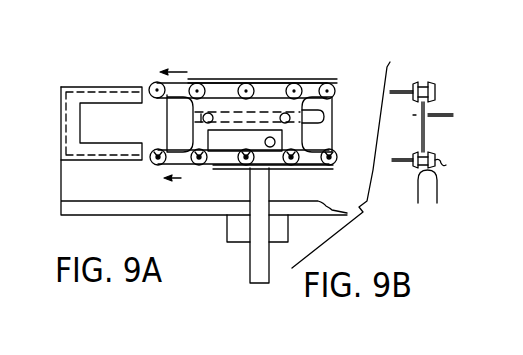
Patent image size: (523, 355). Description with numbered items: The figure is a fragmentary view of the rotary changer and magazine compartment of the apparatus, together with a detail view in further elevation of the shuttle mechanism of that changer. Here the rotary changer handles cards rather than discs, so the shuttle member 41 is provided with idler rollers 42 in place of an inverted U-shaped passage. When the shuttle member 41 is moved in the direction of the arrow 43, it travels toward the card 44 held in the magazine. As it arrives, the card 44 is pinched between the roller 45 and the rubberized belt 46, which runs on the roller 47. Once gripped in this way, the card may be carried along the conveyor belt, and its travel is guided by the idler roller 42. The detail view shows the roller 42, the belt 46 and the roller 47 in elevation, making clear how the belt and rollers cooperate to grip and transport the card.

In FIG. 9A, the shuttle member 41 is at (223, 92).
In FIG. 9A, the idler rollers 42 is at (323, 83).
In FIG. 9B, the idler rollers 42 is at (422, 82).
In FIG. 9A, the arrow 43 is at (173, 65).
In FIG. 9A, the card 44 is at (102, 117).
In FIG. 9A, the roller 45 is at (150, 83).
In FIG. 9A, the rubberized belt 46 is at (177, 160).
In FIG. 9B, the rubberized belt 46 is at (432, 153).
In FIG. 9A, the roller 47 is at (157, 165).
In FIG. 9B, the roller 47 is at (440, 186).